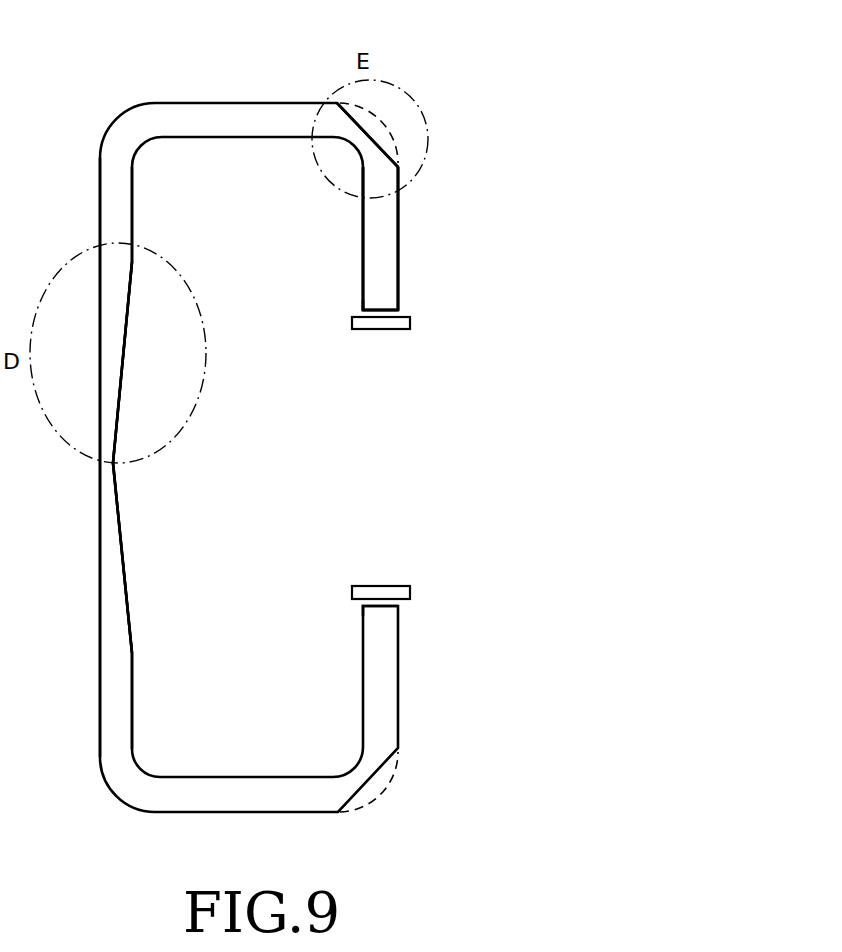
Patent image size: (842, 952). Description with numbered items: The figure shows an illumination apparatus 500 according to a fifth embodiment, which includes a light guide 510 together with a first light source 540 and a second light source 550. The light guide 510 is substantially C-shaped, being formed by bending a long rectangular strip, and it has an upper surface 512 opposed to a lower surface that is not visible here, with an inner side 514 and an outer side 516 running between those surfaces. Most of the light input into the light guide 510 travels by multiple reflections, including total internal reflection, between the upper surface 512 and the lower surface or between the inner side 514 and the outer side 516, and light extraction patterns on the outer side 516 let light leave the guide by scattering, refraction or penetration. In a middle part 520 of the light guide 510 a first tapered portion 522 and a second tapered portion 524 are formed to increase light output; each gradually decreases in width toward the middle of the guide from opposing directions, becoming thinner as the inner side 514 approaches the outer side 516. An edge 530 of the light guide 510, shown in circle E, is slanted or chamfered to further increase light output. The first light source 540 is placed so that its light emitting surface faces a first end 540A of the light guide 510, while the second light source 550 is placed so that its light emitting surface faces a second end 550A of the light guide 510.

The illumination apparatus 500 is at (269, 36).
The light guide 510 is at (404, 250).
The upper surface 512 is at (394, 290).
The inner side 514 is at (363, 222).
The outer side 516 is at (399, 212).
The middle part 520 is at (182, 453).
The first tapered portion 522 is at (137, 262).
The second tapered portion 524 is at (137, 472).
The edge 530 is at (429, 139).
The first light source 540 is at (382, 331).
The first end 540A is at (365, 302).
The second light source 550 is at (382, 585).
The second end 550A is at (380, 606).